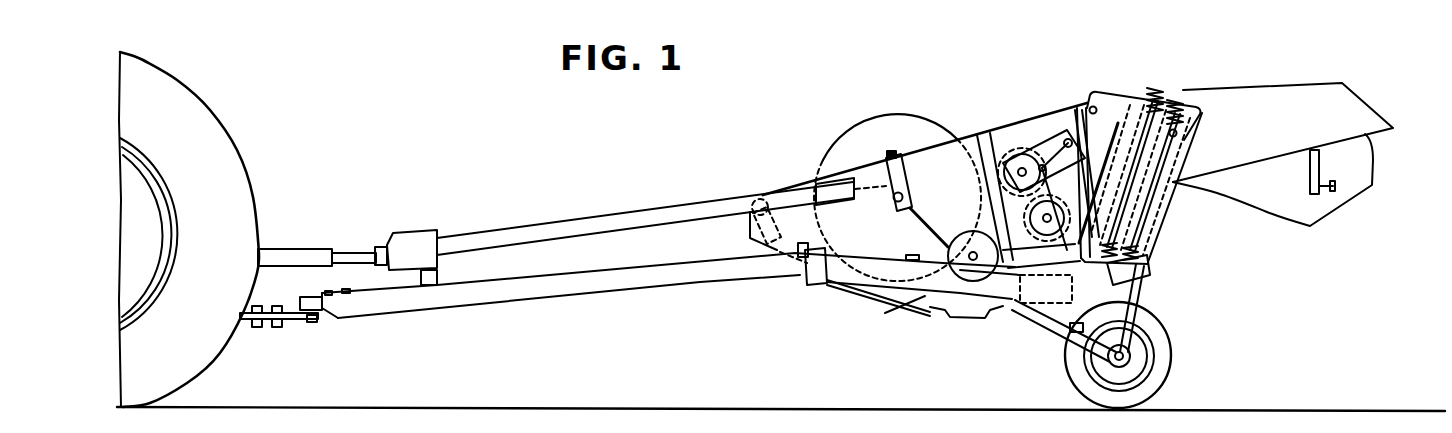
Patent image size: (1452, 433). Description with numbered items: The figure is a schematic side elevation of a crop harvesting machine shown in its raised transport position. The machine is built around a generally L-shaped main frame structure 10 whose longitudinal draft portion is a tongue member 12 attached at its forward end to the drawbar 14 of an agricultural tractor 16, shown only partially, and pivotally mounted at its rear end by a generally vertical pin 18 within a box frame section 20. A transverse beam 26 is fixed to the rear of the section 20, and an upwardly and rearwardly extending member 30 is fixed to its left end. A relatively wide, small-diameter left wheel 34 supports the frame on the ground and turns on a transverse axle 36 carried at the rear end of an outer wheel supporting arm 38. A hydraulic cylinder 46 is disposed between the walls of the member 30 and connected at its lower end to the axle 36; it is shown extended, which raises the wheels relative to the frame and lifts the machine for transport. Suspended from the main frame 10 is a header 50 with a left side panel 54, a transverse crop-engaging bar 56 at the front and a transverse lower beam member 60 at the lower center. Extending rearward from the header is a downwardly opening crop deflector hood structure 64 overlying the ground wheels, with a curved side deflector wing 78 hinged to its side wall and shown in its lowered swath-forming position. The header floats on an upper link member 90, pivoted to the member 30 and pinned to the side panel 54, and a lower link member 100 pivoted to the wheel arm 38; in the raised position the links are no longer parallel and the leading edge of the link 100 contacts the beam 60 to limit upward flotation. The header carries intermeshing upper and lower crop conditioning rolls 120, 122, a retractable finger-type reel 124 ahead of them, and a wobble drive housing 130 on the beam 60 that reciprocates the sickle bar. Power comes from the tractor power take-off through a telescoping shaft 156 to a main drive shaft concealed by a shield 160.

The main frame structure 10 is at (753, 291).
The tongue member 12 is at (622, 284).
The drawbar 14 is at (267, 321).
The agricultural tractor 16 is at (257, 142).
The vertical pin 18 is at (912, 296).
The box frame section 20 is at (848, 281).
The transverse beam 26 is at (1020, 313).
The left upwardly and rearwardly extending member 30 is at (1158, 243).
The left wheel 34 is at (1167, 358).
The transverse axle 36 is at (1135, 346).
The outer wheel supporting arm 38 is at (1093, 347).
The hydraulic cylinder 46 is at (1140, 277).
The subframe or header 50 is at (1005, 99).
The left side panel 54 is at (840, 217).
The transverse crop-engaging bar 56 is at (755, 193).
The transverse lower beam member 60 is at (980, 314).
The crop deflector hood structure 64 is at (1257, 80).
The left side deflector wing 78 is at (1325, 207).
The upper link member 90 is at (1128, 80).
The lower link member 100 is at (1038, 318).
The upper crop conditioning roll 120 is at (1020, 143).
The lower crop conditioning roll 122 is at (1076, 187).
The retractable finger-type reel 124 is at (883, 112).
The wobble drive housing 130 is at (964, 235).
The telescoping shaft 156 is at (293, 258).
The shield 160 is at (567, 225).